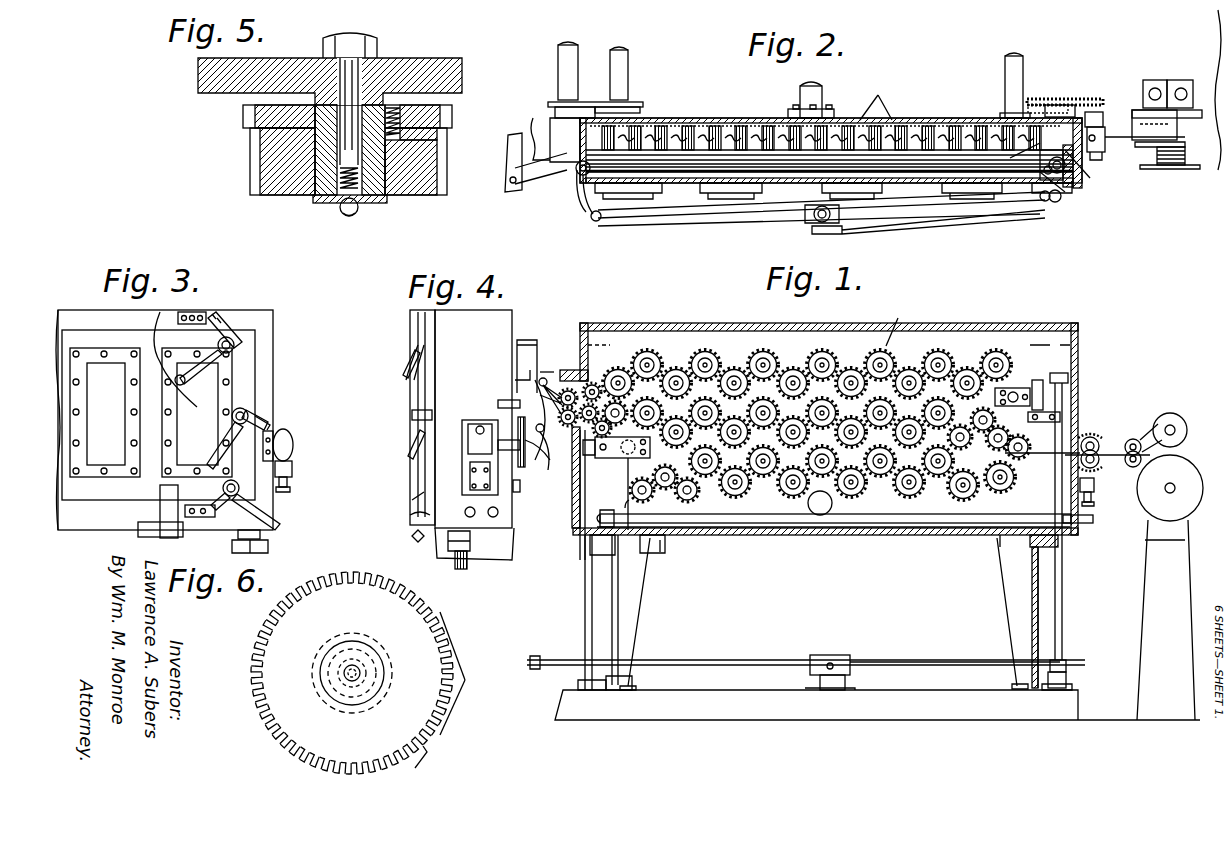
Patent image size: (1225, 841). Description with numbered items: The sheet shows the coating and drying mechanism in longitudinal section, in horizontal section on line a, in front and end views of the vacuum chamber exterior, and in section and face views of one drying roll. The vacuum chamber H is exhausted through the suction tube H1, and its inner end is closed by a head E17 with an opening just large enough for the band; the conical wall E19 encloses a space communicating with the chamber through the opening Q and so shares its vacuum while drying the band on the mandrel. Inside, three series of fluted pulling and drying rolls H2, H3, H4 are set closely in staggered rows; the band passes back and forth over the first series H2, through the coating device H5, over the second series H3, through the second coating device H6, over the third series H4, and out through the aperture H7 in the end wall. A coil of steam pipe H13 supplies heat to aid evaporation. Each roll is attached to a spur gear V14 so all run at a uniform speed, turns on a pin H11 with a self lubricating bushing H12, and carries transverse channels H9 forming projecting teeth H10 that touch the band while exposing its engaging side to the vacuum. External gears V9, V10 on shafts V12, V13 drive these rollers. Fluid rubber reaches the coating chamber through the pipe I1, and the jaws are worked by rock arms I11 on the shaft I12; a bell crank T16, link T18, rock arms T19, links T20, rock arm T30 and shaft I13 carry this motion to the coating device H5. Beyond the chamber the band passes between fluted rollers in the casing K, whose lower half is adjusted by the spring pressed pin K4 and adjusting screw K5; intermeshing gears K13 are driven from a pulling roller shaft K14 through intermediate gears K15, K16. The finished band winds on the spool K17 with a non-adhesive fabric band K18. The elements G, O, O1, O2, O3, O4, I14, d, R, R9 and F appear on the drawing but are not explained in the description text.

In FIG. 5, the frame plate G is at (425, 60).
In FIG. 2, the frame plate G is at (672, 122).
In FIG. 1, the frame plate G is at (819, 433).
In FIG. 5, the spur gears V14 is at (452, 128).
In FIG. 2, the spur gears V14 is at (876, 101).
In FIG. 1, the spur gears V14 is at (916, 345).
In FIG. 6, the spur gears V14 is at (438, 757).
In FIG. 5, the first series of pulling and drying rolls H2 is at (262, 158).
In FIG. 1, the first series of pulling and drying rolls H2 is at (705, 363).
In FIG. 6, the first series of pulling and drying rolls H2 is at (326, 673).
In FIG. 5, the self lubricating bushings H12 is at (330, 200).
In FIG. 5, the pins H11 is at (372, 200).
In FIG. 2, the shaft V12 is at (560, 64).
In FIG. 2, the external gear V9 is at (595, 78).
In FIG. 2, the pipe I1 is at (625, 70).
In FIG. 4, the pipe I1 is at (512, 385).
In FIG. 2, the external gear V10 is at (640, 102).
In FIG. 2, the suction tube H1 is at (822, 92).
In FIG. 2, the coating device H5 is at (1005, 100).
In FIG. 1, the coating device H5 is at (1020, 385).
In FIG. 2, the shaft of interior pulling roller K14 is at (1035, 95).
In FIG. 2, the intermediate gear K15 is at (1062, 104).
In FIG. 2, the intermediate gear K16 is at (1095, 112).
In FIG. 4, the intermediate gear K16 is at (516, 425).
In FIG. 2, the intermeshing gears K13 is at (1150, 85).
In FIG. 4, the intermeshing gears K13 is at (526, 493).
In FIG. 2, the non-adhesive fabric band K18 is at (1148, 130).
In FIG. 1, the non-adhesive fabric band K18 is at (1140, 440).
In FIG. 2, the spool K17 is at (1170, 170).
In FIG. 1, the spool K17 is at (1170, 587).
In FIG. 3, the casing K is at (292, 440).
In FIG. 1, the casing K is at (1098, 435).
In FIG. 3, the spring pressed pin K4 is at (292, 468).
In FIG. 1, the spring pressed pin K4 is at (1094, 480).
In FIG. 3, the adjusting screw K5 is at (290, 490).
In FIG. 1, the adjusting screw K5 is at (1092, 500).
In FIG. 2, the aperture H7 is at (1075, 150).
In FIG. 4, the aperture H7 is at (474, 444).
In FIG. 2, the vacuum chamber H is at (1065, 175).
In FIG. 1, the vacuum chamber H is at (990, 345).
In FIG. 2, the clamp plate O1 is at (632, 195).
In FIG. 3, the clamp plate O1 is at (103, 380).
In FIG. 2, the clamp O is at (1040, 195).
In FIG. 3, the lever O2 is at (232, 340).
In FIG. 4, the lever O2 is at (412, 362).
In FIG. 3, the lever arm O3 is at (222, 320).
In FIG. 4, the lever arm O3 is at (412, 323).
In FIG. 3, the frame plate O4 is at (240, 368).
In FIG. 2, the link T18 is at (660, 214).
In FIG. 1, the link T18 is at (728, 658).
In FIG. 2, the rock arms T19 is at (806, 218).
In FIG. 1, the rock arms T19 is at (810, 666).
In FIG. 2, the links T20 is at (955, 217).
In FIG. 1, the links T20 is at (945, 660).
In FIG. 2, the rock arm T30 is at (1058, 202).
In FIG. 1, the rock arm T30 is at (1062, 668).
In FIG. 1, the bell crank T16 is at (563, 662).
In FIG. 2, the coil of steam pipe H13 is at (700, 180).
In FIG. 1, the coil of steam pipe H13 is at (970, 525).
In FIG. 2, the rock arm I11 is at (1047, 175).
In FIG. 4, the rock arm I11 is at (576, 478).
In FIG. 1, the rock arm I11 is at (1048, 380).
In FIG. 2, the shaft I13 is at (1075, 180).
In FIG. 3, the shaft I13 is at (260, 548).
In FIG. 4, the shaft I13 is at (466, 568).
In FIG. 1, the shaft I13 is at (1064, 590).
In FIG. 3, the bracket I14 is at (180, 530).
In FIG. 4, the bracket I14 is at (512, 536).
In FIG. 1, the bracket I14 is at (1064, 548).
In FIG. 1, the shaft I12 is at (584, 598).
In FIG. 1, the shaft V13 is at (614, 378).
In FIG. 4, the head E17 is at (545, 364).
In FIG. 1, the head E17 is at (596, 326).
In FIG. 4, the conical wall E19 is at (547, 405).
In FIG. 4, the stop d is at (524, 360).
In FIG. 4, the section line a is at (547, 362).
In FIG. 1, the section line a is at (1082, 352).
In FIG. 4, the opening Q is at (537, 373).
In FIG. 4, the lever R is at (552, 408).
In FIG. 4, the pivot pin R9 is at (546, 440).
In FIG. 4, the arm F is at (560, 455).
In FIG. 1, the second coating device H6 is at (628, 460).
In FIG. 1, the third series of pulling and drying rolls H4 is at (760, 500).
In FIG. 1, the second series of pulling and drying rolls H3 is at (900, 505).
In FIG. 6, the transverse channels H9 is at (440, 618).
In FIG. 6, the projecting teeth H10 is at (440, 708).